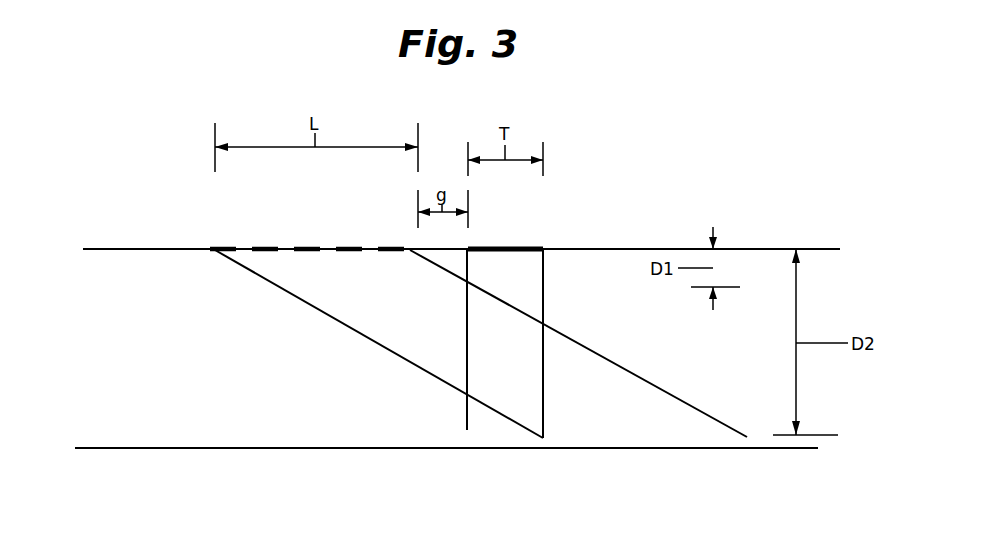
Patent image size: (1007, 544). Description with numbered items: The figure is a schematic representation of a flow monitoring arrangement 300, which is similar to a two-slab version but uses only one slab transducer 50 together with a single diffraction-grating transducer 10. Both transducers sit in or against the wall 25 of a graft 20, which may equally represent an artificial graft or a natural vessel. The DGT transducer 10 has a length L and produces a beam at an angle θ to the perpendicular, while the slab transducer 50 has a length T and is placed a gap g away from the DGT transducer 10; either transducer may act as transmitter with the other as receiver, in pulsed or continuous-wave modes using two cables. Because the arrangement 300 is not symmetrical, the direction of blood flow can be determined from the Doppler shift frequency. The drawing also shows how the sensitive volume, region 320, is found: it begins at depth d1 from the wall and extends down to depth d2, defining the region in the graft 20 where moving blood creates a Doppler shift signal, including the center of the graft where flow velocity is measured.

The arrangement 300 is at (132, 106).
The transducer 10 is at (340, 246).
The slab transducer 50 is at (527, 247).
The wall 25 is at (626, 249).
The graft 20 is at (150, 436).
The region 320 is at (524, 366).